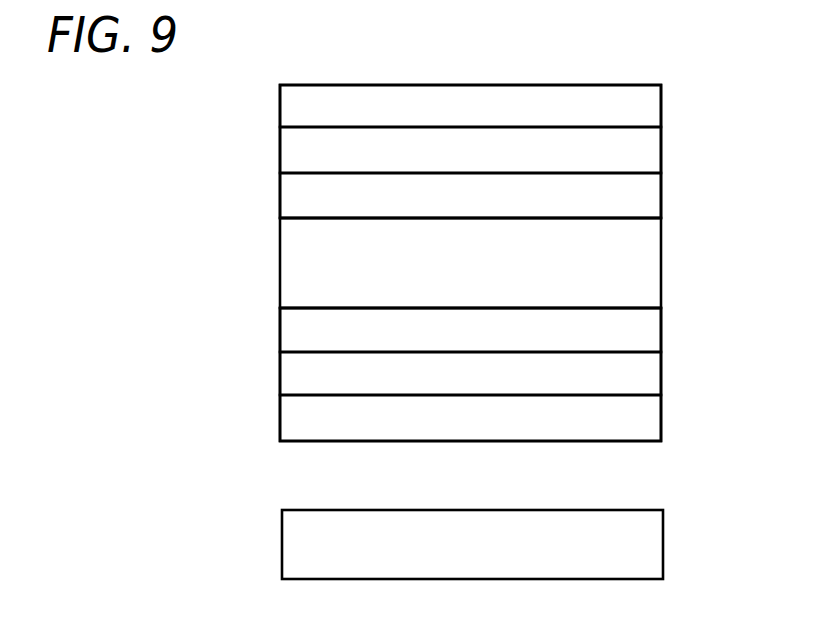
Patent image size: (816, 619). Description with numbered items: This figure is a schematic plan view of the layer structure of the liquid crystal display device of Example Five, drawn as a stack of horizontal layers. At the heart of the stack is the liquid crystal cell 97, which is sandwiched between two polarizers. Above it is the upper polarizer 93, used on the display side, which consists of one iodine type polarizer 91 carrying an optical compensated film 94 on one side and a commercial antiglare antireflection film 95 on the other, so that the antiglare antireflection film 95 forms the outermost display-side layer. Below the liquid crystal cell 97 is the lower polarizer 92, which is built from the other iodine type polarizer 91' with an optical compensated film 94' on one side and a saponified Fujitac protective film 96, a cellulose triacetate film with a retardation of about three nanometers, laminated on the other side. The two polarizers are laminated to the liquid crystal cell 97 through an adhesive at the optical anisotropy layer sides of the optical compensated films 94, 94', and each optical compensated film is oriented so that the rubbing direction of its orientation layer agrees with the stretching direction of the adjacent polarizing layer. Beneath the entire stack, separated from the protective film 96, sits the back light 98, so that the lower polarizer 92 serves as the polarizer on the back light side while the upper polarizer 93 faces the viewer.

The antiglare antireflection film 95 is at (470, 106).
The iodine type polarizer 91 is at (470, 150).
The optical compensated film 94 is at (470, 195).
The liquid crystal cell 97 is at (470, 263).
The optical compensated film 94' is at (470, 330).
The iodine type polarizer 91' is at (470, 373).
The protective film 96 is at (470, 418).
The back light 98 is at (472, 544).
The upper polarizer 93 is at (685, 88).
The lower polarizer 92 is at (687, 315).